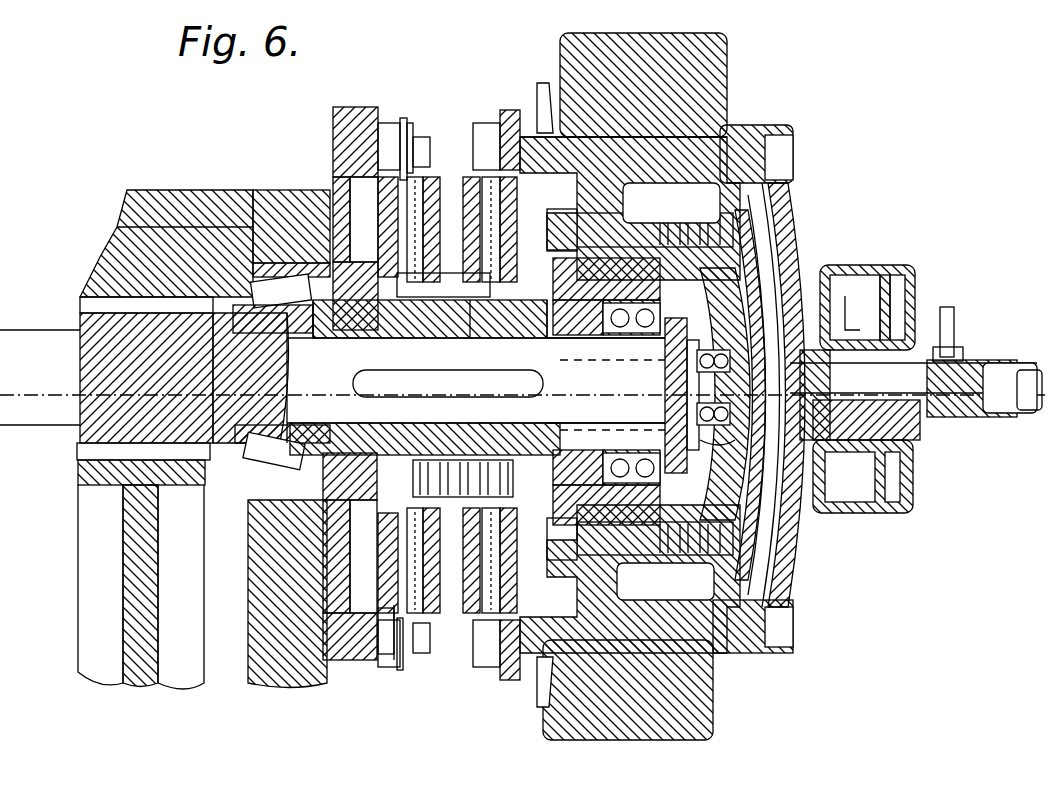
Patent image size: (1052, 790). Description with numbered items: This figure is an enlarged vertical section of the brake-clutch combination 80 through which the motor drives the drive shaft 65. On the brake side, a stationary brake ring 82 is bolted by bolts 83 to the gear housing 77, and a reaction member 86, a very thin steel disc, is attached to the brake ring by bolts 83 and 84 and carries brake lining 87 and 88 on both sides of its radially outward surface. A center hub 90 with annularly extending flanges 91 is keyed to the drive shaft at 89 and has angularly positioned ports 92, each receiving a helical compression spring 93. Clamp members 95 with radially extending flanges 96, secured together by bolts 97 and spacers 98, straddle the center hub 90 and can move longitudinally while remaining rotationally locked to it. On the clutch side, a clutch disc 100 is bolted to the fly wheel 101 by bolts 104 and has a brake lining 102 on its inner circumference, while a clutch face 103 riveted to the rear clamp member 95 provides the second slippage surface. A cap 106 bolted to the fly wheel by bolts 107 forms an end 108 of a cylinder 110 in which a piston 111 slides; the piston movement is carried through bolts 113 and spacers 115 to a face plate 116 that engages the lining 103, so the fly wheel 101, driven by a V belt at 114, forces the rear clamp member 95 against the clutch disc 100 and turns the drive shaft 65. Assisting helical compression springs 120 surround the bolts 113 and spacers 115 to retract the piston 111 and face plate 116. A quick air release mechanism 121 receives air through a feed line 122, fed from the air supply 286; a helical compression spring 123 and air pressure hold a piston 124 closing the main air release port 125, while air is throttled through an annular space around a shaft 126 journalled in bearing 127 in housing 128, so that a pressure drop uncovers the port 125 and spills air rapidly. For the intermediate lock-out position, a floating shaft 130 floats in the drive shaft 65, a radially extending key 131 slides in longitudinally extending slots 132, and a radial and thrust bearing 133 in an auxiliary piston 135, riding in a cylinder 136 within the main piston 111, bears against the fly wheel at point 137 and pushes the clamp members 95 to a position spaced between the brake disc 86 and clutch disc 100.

The drive shaft 65 is at (144, 439).
The gear housing 77 is at (278, 200).
The clutch-brake combination 80 is at (730, 58).
The stationary brake ring 82 is at (333, 127).
The bolts 83 is at (396, 655).
The bolts 84 is at (424, 137).
The reaction member 86 is at (410, 123).
The brake lining 87 is at (407, 178).
The brake lining 88 is at (388, 123).
The key 89 is at (420, 385).
The center hub 90 is at (438, 338).
The annularly extending flanges 91 is at (445, 230).
The ports 92 is at (440, 500).
The helical compression spring 93 is at (425, 439).
The clamp members 95 is at (360, 262).
The radially extending flanges 96 is at (310, 568).
The bolts 97 is at (355, 338).
The spacers 98 is at (443, 285).
The clutch disc 100 is at (490, 163).
The fly wheel 101 is at (635, 386).
The brake lining 102 is at (630, 395).
The clutch face 103 is at (578, 385).
The bolts 104 is at (503, 125).
The cap 106 is at (745, 130).
The bolts 107 is at (793, 155).
The end 108 is at (860, 513).
The cylinder 110 is at (760, 265).
The piston 111 is at (765, 255).
The bolts 113 is at (780, 240).
The V belt engagement 114 is at (542, 95).
The spacers 115 is at (775, 215).
The face plate 116 is at (606, 391).
The assisting helical compression springs 120 is at (668, 389).
The quick air release mechanism 121 is at (915, 288).
The feed line 122 is at (952, 307).
The helical compression spring 123 is at (606, 380).
The piston 124 is at (665, 360).
The main air release port 125 is at (895, 245).
The shaft 126 is at (687, 390).
The bearing 127 is at (915, 430).
The housing 128 is at (885, 270).
The floating shaft 130 is at (500, 383).
The key 131 is at (540, 338).
The slots 132 is at (606, 393).
The radial and thrust bearing 133 is at (711, 394).
The auxiliary piston 135 is at (709, 404).
The cylinder 136 is at (720, 460).
The bearing point 137 is at (631, 380).
The air supply 286 is at (953, 335).